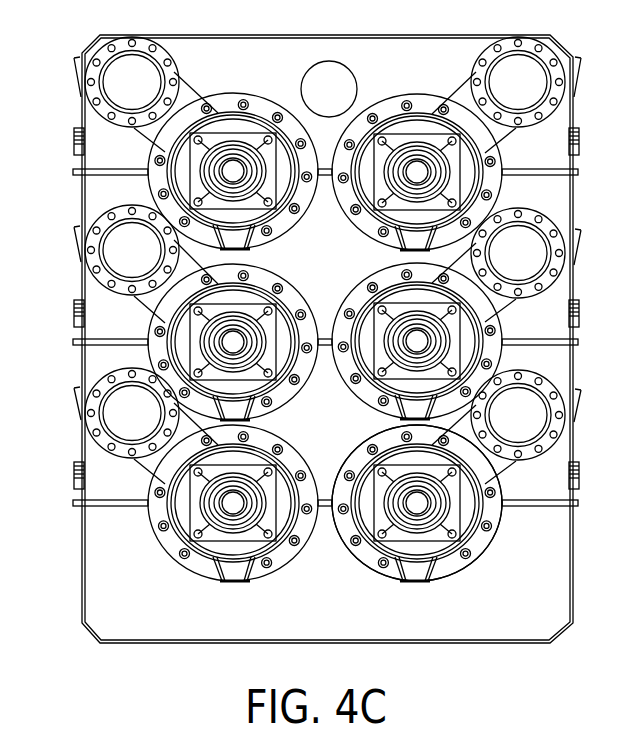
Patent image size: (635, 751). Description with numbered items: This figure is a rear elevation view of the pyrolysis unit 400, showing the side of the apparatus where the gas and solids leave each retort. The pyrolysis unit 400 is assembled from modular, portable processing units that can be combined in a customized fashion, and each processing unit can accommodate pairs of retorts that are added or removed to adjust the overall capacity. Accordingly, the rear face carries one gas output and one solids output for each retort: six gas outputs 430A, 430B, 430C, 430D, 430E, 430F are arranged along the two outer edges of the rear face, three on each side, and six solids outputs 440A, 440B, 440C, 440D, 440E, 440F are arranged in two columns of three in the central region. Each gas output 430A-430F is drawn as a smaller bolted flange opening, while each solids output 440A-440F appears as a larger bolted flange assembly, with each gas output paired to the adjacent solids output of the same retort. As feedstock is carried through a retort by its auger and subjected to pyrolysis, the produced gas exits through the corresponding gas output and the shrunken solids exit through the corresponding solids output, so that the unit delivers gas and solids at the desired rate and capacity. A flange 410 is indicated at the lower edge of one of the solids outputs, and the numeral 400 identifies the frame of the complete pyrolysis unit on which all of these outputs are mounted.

The pyrolysis unit 400 is at (521, 644).
The outer flange 410 is at (450, 578).
The gas output 430A is at (115, 413).
The gas output 430B is at (115, 250).
The gas output 430C is at (115, 85).
The gas output 430D is at (530, 415).
The gas output 430E is at (530, 253).
The gas output 430F is at (533, 83).
The solids output 440A is at (226, 504).
The solids output 440B is at (228, 339).
The solids output 440C is at (228, 169).
The solids output 440D is at (421, 505).
The solids output 440E is at (423, 341).
The solids output 440F is at (422, 174).